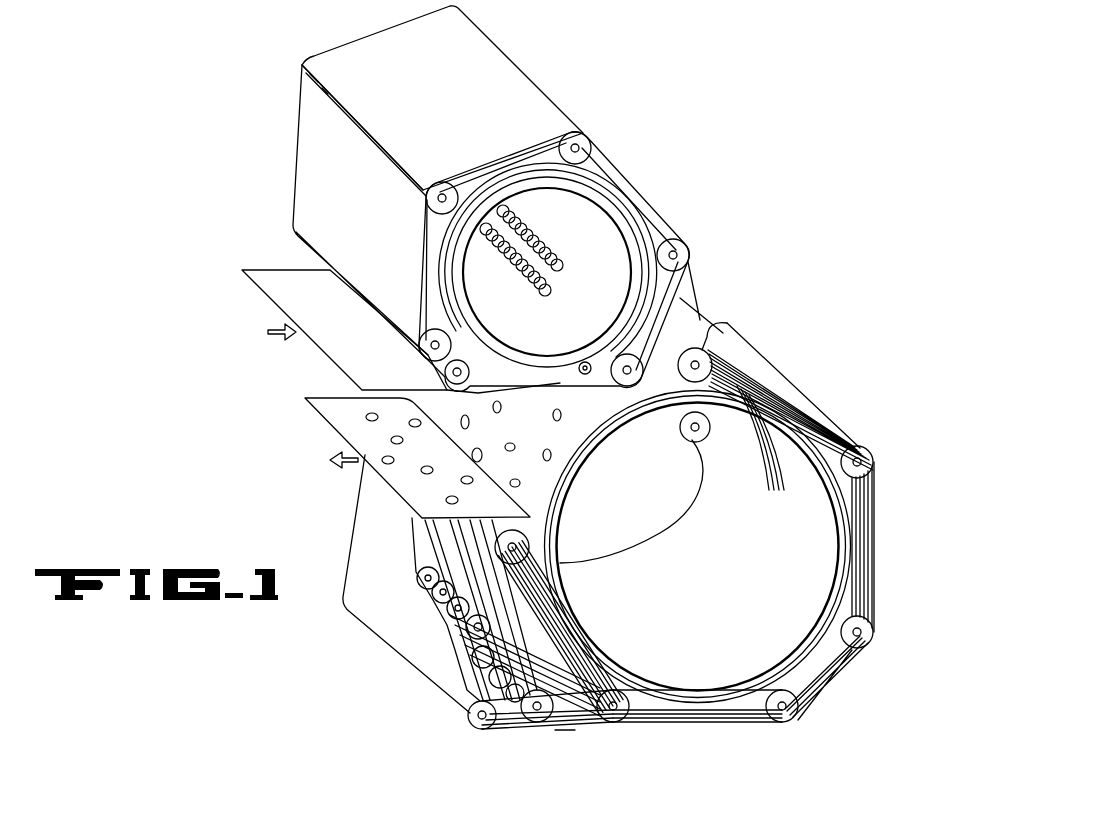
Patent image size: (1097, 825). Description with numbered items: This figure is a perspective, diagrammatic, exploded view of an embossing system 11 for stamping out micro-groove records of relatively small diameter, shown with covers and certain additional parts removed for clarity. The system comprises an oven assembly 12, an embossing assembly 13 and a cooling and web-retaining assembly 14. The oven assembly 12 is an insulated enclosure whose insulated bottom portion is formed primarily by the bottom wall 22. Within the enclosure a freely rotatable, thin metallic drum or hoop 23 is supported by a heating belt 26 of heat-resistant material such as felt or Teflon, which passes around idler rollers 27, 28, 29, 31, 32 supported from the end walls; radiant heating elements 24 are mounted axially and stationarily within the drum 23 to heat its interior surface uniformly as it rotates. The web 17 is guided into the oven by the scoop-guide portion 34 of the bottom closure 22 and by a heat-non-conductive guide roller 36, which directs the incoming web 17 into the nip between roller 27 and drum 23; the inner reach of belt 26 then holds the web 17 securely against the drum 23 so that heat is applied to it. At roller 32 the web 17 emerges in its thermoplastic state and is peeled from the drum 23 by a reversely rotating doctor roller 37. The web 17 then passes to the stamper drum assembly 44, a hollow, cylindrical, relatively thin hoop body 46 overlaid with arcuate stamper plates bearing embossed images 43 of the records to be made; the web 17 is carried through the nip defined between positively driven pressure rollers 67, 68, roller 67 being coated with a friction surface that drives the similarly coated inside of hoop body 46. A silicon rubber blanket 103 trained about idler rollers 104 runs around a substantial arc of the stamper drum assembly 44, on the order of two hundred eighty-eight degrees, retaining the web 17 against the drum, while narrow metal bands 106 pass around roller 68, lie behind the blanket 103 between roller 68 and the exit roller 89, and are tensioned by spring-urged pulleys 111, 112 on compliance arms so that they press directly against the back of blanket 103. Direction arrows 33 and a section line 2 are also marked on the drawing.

The section line 2 is at (660, 458).
The embossing system 11 is at (760, 88).
The oven assembly 12 is at (247, 165).
The embossing assembly 13 is at (730, 426).
The cooling and web-retaining assembly 14 is at (825, 710).
The web 17 is at (326, 306).
The bottom wall 22 is at (515, 393).
The drum 23 is at (522, 312).
The radiant heating elements 24 is at (615, 280).
The heating belt 26 is at (464, 139).
The idler roller 27 is at (420, 350).
The idler roller 28 is at (430, 210).
The idler roller 29 is at (585, 135).
The idler roller 31 is at (687, 252).
The idler roller 32 is at (620, 362).
The direction arrow 33 is at (438, 60).
The scoop-guide portion 34 is at (432, 397).
The guide roller 36 is at (446, 366).
The doctor roller 37 is at (587, 374).
The embossed images 43 is at (545, 480).
The stamper drum assembly 44 is at (822, 545).
The hoop body 46 is at (697, 617).
The pressure roller 67 is at (692, 442).
The pressure roller 68 is at (697, 355).
The exit roller 89 is at (522, 545).
The silicon rubber blanket 103 is at (402, 570).
The idler rollers 104 is at (862, 450).
The bands 106 is at (555, 762).
The pulleys 111 is at (462, 637).
The pulleys 112 is at (528, 724).